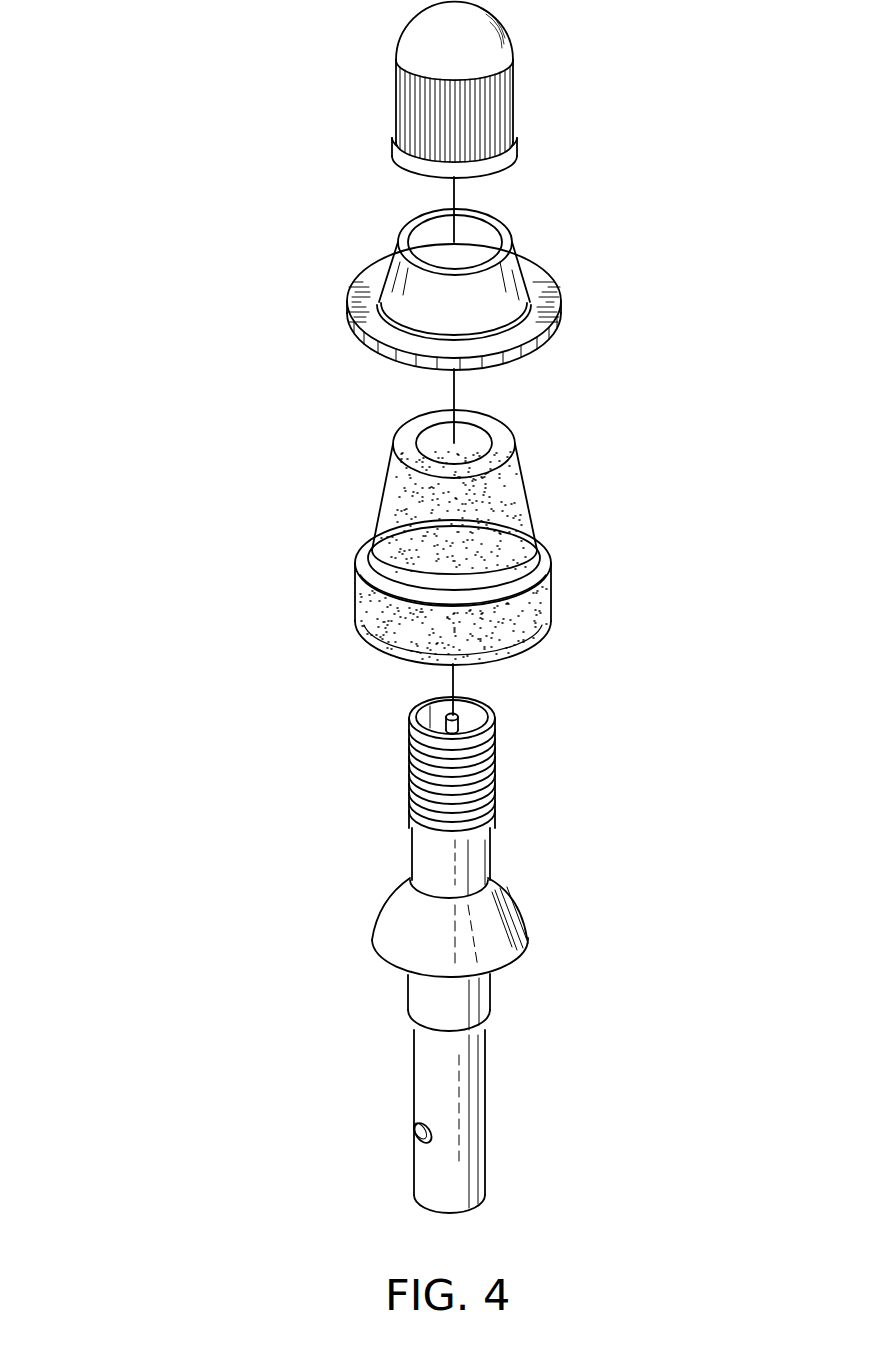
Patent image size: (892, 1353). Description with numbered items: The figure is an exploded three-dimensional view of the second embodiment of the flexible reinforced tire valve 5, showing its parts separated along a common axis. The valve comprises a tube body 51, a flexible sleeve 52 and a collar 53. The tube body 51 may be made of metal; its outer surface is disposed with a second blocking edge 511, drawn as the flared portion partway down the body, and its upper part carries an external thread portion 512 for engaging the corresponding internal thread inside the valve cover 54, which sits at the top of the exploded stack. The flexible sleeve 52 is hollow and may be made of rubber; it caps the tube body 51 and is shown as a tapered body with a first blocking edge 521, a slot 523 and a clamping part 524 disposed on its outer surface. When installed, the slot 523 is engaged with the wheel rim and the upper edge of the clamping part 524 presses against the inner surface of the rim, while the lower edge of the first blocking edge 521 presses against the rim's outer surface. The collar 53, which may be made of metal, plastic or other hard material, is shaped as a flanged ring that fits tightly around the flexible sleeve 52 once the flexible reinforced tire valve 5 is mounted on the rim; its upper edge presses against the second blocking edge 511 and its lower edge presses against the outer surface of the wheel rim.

The flexible reinforced tire valve 5 is at (207, 440).
The tube body 51 is at (530, 875).
The second blocking edge 511 is at (512, 962).
The threaded portion 512 is at (482, 780).
The flexible sleeve 52 is at (562, 503).
The first blocking edge 521 is at (547, 550).
The slot 523 is at (532, 582).
The clamping part 524 is at (520, 610).
The collar 53 is at (553, 253).
The valve cover 54 is at (502, 103).